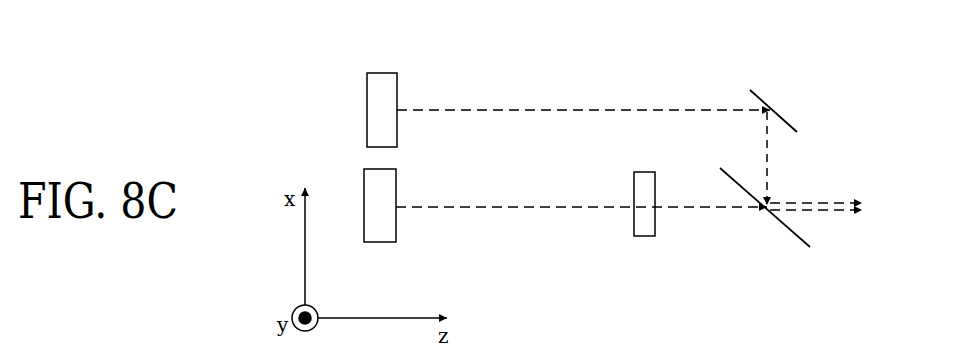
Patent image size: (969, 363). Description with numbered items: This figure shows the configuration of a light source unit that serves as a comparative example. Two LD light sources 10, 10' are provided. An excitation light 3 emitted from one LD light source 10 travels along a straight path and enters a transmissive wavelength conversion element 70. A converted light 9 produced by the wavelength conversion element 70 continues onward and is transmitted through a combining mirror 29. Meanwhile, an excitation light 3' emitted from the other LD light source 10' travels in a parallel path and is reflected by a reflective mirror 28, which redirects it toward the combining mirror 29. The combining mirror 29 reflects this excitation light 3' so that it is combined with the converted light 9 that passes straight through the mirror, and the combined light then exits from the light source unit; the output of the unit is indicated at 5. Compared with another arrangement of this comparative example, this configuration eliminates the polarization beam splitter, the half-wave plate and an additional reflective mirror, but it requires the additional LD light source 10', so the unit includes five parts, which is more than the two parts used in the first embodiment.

The LD light source 10' is at (360, 84).
The LD light source 10 is at (399, 232).
The excitation light 3' is at (583, 77).
The excitation light 3 is at (581, 237).
The wavelength conversion element 70 is at (643, 236).
The reflective mirror 28 is at (786, 116).
The combining mirror 29 is at (803, 235).
The combined output beam 5 is at (833, 201).
The converted light 9 is at (833, 213).